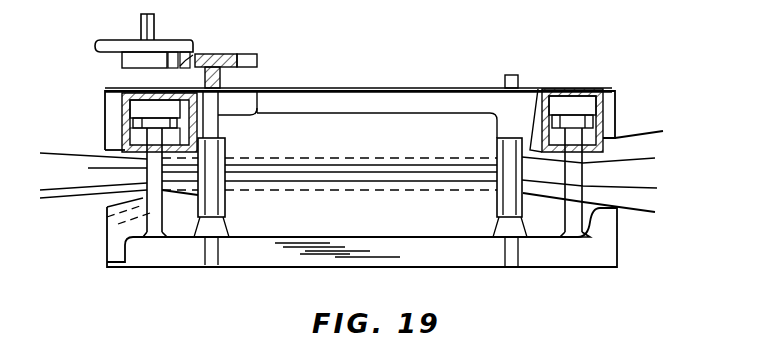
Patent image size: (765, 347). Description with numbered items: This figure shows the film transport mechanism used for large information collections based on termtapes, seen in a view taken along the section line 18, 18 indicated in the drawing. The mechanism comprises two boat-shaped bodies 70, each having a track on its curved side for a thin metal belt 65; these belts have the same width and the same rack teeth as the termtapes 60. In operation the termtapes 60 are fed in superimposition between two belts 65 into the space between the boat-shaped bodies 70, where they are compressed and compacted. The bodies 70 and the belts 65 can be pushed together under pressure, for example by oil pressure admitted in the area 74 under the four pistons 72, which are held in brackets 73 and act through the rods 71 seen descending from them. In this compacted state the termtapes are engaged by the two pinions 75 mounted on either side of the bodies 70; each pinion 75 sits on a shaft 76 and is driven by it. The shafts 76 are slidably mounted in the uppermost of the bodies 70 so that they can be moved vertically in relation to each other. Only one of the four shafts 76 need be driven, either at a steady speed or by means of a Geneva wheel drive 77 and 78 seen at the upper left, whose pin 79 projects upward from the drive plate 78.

The section line 18- 18 is at (512, 62).
The termtapes 60 is at (655, 158).
The thin metal belt 65 is at (660, 131).
The boat-shaped body 70 is at (608, 100).
The support rod 71 is at (147, 180).
The piston 72 is at (135, 125).
The bracket 73 is at (135, 108).
The area 74 is at (135, 142).
The pinion 75 is at (233, 202).
The shaft 76 is at (250, 88).
The Geneva wheel drive 77 is at (252, 55).
The Geneva wheel drive 78 is at (118, 43).
The pin 79 is at (155, 26).